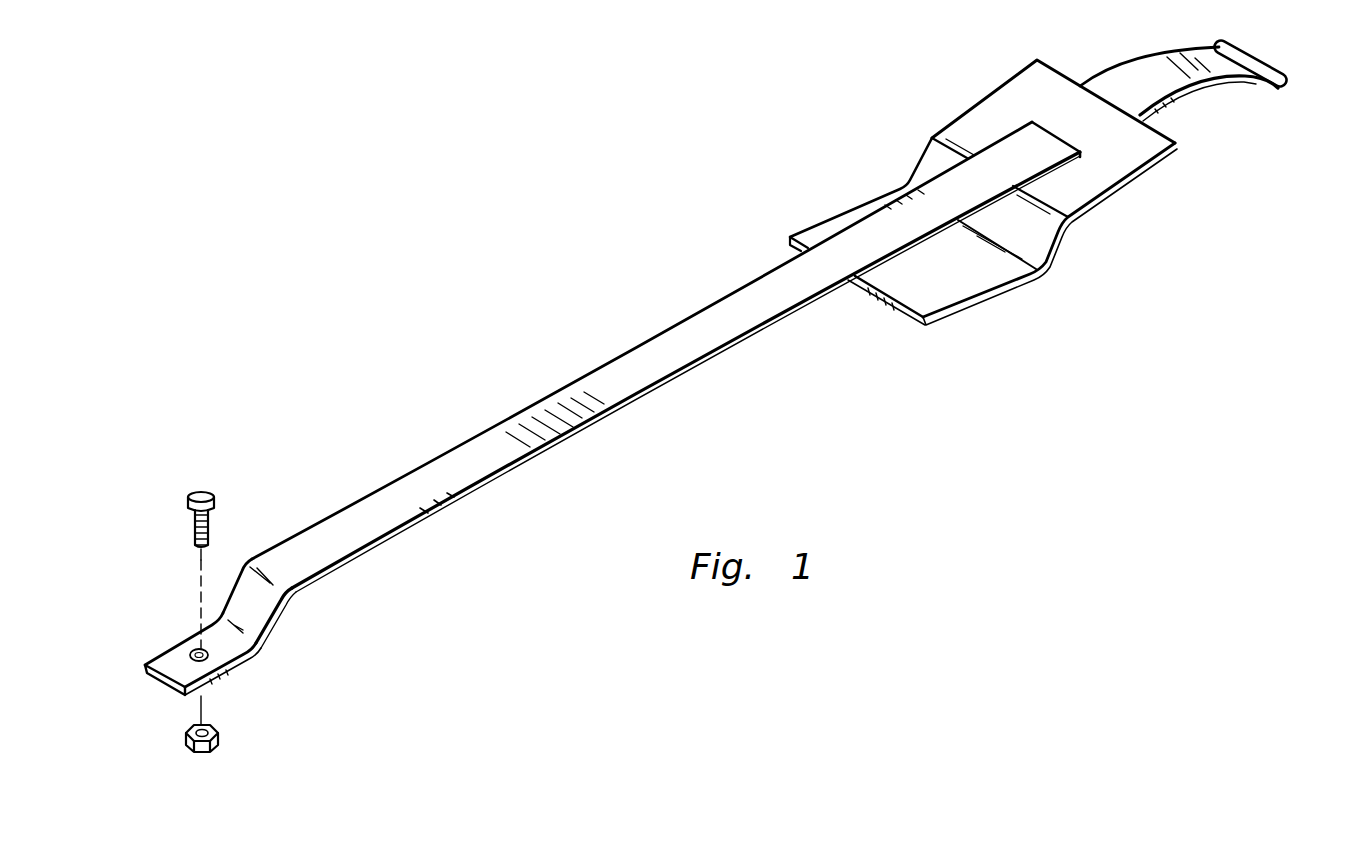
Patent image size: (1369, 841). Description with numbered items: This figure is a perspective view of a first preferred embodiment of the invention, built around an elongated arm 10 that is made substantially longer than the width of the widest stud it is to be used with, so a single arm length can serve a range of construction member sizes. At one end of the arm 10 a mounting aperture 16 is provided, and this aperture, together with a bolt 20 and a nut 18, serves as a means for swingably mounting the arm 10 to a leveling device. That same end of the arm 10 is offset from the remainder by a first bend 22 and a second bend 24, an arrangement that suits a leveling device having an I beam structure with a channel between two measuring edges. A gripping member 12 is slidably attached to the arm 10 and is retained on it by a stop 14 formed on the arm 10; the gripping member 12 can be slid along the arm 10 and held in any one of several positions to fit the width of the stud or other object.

The arm 10 is at (660, 363).
The gripping member 12 is at (1043, 237).
The stop 14 is at (1283, 90).
The mounting aperture 16 is at (247, 659).
The nut 18 is at (220, 731).
The bolt 20 is at (215, 502).
The first bend 22 is at (198, 580).
The second bend 24 is at (289, 604).